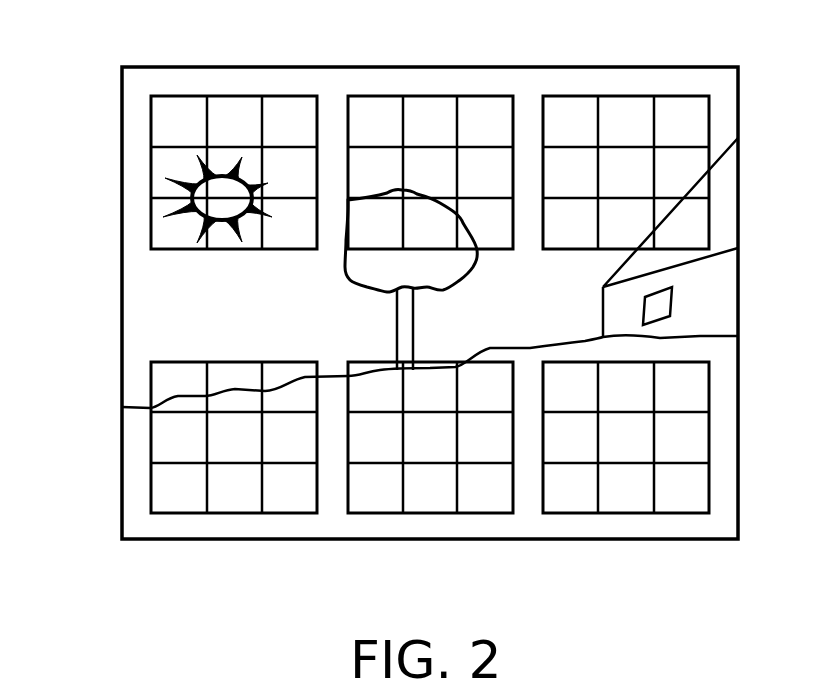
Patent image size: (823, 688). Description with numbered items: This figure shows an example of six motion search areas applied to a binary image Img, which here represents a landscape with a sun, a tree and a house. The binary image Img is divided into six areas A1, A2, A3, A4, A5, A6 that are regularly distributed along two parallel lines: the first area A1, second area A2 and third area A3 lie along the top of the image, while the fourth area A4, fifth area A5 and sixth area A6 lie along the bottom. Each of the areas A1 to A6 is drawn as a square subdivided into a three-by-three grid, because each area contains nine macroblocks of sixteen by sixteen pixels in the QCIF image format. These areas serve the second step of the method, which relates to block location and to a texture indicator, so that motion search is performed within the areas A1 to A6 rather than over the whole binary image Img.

The binary image Img is at (122, 305).
The motion search area A1 is at (235, 95).
The motion search area A2 is at (430, 95).
The motion search area A3 is at (626, 95).
The motion search area A4 is at (235, 515).
The motion search area A5 is at (430, 515).
The motion search area A6 is at (626, 515).